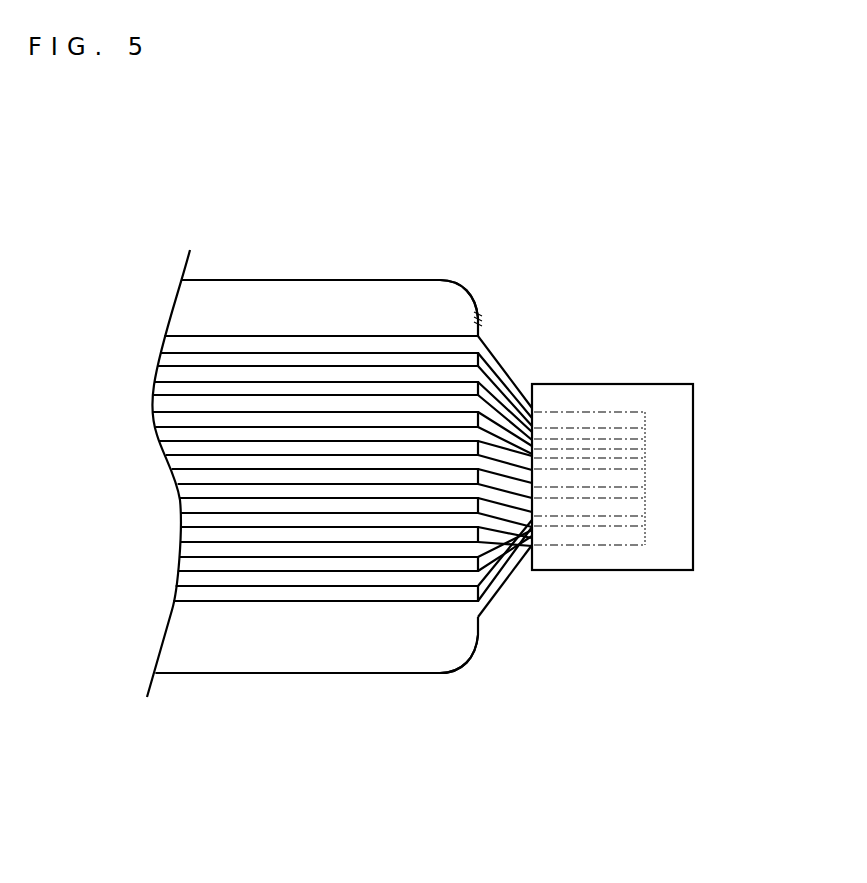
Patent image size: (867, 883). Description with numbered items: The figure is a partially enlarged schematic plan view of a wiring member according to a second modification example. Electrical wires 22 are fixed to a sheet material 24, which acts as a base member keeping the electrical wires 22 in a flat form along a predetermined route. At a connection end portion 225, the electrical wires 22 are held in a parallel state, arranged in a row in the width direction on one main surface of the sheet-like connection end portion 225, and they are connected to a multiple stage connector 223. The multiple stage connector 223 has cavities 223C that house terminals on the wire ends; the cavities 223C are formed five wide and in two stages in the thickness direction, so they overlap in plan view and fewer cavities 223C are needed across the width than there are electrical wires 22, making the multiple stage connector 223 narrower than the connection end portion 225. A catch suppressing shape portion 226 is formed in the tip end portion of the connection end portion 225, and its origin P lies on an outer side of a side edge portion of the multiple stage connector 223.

The electrical wire 22 is at (340, 393).
The sheet material 24 is at (275, 657).
The connection end portion 225 is at (374, 280).
The catch suppressing shape portion 226 is at (470, 297).
The origin P is at (482, 318).
The multiple stage connector 223 is at (614, 384).
The cavity 223C is at (700, 447).